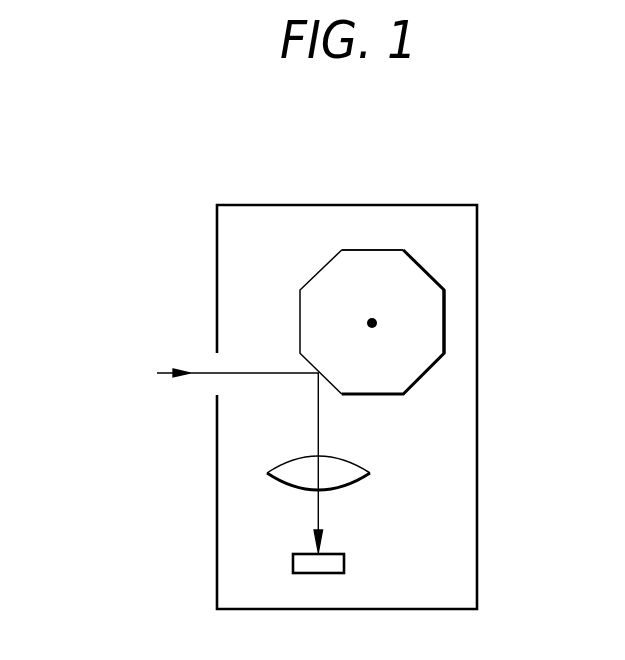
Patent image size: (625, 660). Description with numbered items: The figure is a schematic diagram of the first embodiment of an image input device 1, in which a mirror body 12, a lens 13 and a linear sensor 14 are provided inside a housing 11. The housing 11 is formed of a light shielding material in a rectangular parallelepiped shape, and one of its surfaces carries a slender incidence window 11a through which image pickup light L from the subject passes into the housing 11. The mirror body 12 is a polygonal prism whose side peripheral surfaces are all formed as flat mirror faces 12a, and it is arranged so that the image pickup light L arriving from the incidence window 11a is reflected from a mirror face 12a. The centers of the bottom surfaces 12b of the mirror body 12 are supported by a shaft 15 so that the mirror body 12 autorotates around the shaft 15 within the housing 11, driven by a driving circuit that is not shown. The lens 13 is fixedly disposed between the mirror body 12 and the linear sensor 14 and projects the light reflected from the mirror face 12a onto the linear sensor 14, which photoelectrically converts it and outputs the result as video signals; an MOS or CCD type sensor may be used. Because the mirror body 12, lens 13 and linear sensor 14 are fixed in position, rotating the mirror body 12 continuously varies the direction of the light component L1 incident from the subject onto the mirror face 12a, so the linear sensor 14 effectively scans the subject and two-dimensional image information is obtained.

The image input device 1 is at (477, 192).
The housing 11 is at (477, 285).
The incidence window 11a is at (213, 383).
The mirror body 12 is at (438, 267).
The mirror face 12a is at (445, 332).
The bottom surface 12b is at (370, 267).
The lens 13 is at (365, 470).
The linear sensor 14 is at (344, 560).
The shaft 15 is at (372, 323).
The image pickup light L is at (238, 372).
The light component L1 is at (265, 376).